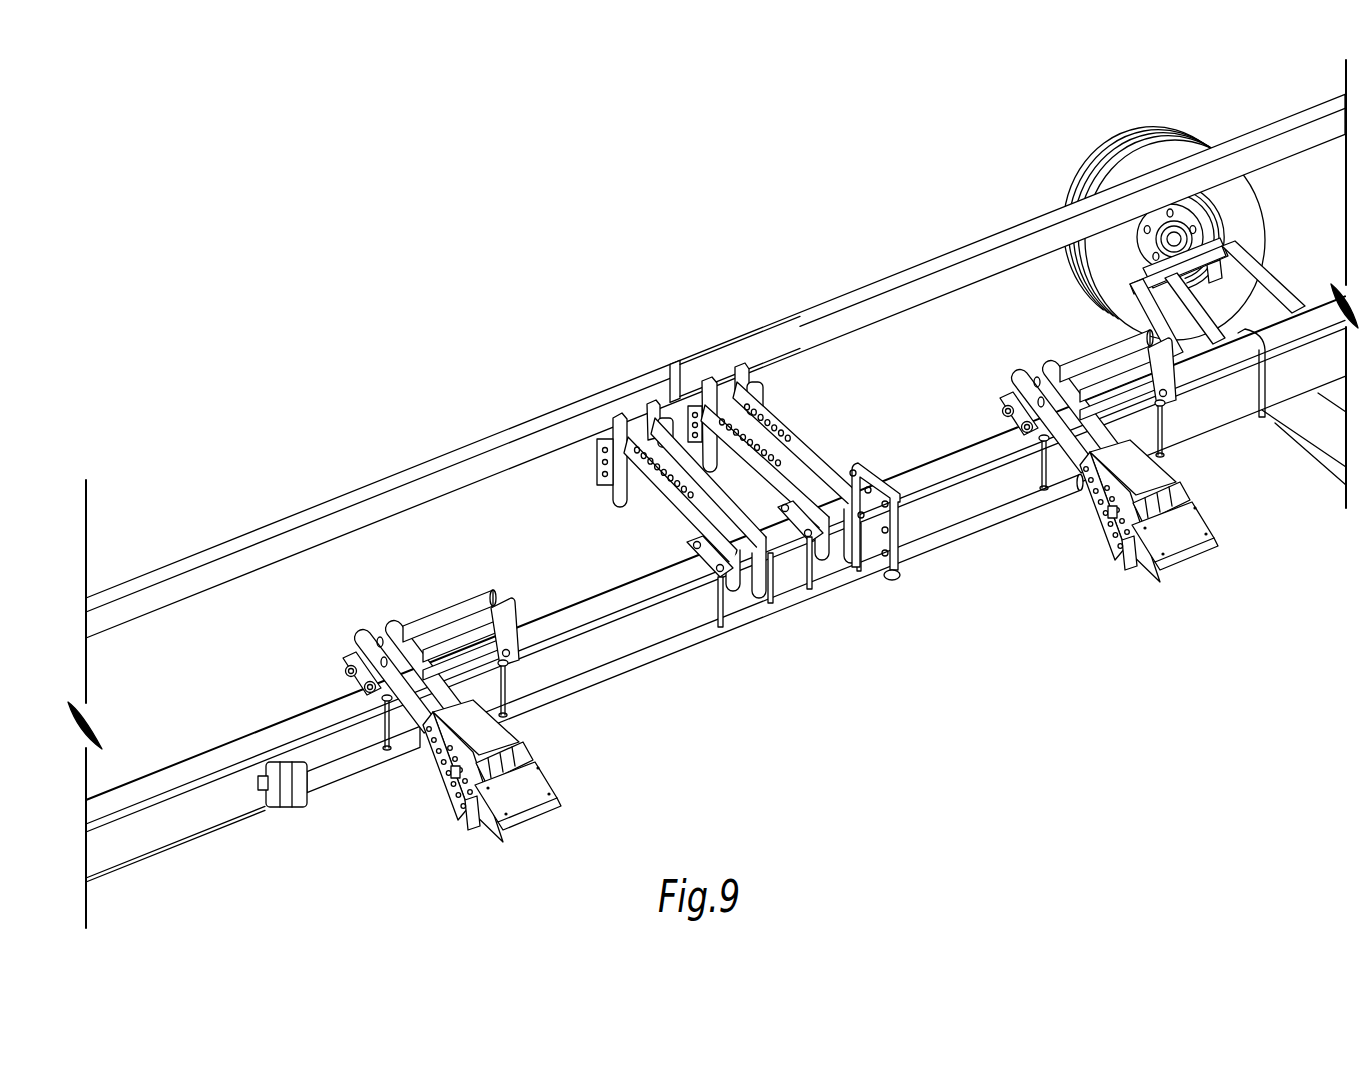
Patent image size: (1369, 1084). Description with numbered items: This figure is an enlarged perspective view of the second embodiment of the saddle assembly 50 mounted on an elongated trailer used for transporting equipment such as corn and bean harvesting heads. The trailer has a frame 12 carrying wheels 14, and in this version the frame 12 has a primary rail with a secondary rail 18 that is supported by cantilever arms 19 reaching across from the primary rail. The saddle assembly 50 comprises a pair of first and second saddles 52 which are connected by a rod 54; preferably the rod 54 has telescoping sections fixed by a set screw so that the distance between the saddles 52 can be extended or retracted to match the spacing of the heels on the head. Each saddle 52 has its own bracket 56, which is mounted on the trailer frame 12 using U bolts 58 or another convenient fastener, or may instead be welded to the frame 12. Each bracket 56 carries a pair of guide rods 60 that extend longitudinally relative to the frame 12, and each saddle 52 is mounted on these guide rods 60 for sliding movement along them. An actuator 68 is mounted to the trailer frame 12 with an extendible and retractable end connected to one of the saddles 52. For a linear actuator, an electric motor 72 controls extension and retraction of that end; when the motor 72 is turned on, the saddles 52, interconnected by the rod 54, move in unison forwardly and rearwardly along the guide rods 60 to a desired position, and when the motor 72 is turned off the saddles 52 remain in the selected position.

The frame 12 is at (975, 455).
The wheels 14 is at (1250, 218).
The secondary rail 18 is at (878, 290).
The cantilever arms 19 is at (787, 432).
The saddle assembly 50 is at (372, 845).
The saddles 52 is at (1143, 475).
The rod 54 is at (627, 670).
The bracket 56 is at (1135, 360).
The U bolts 58 is at (1165, 400).
The guide rods 60 is at (1075, 378).
The actuator 68 is at (323, 757).
The electric motor 72 is at (310, 785).